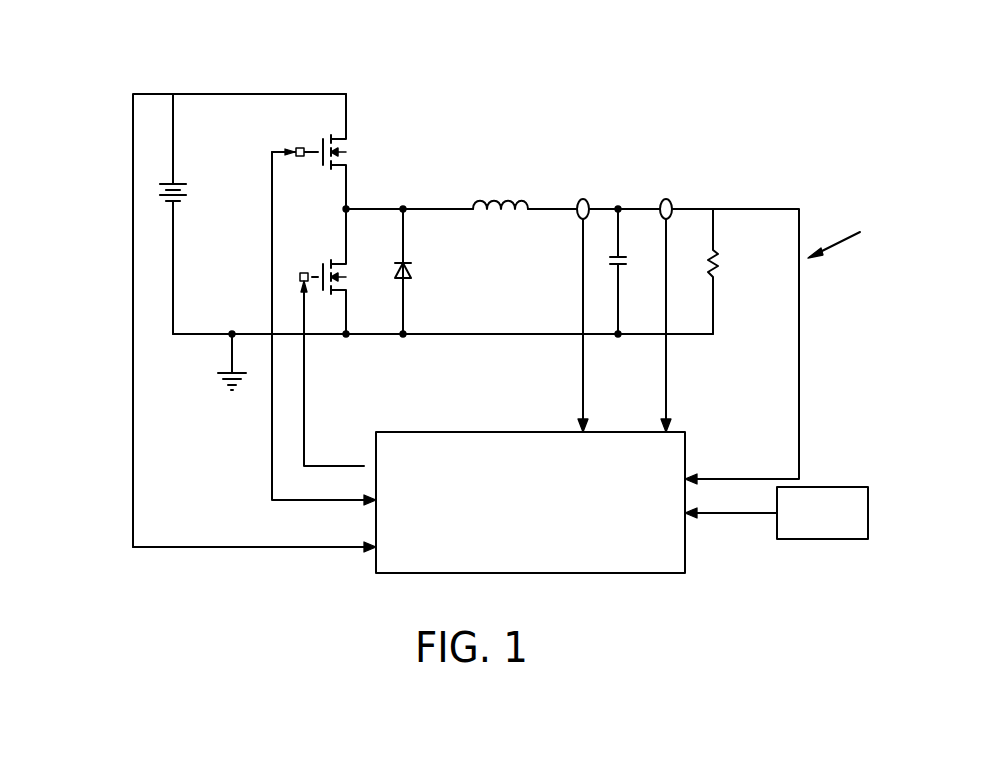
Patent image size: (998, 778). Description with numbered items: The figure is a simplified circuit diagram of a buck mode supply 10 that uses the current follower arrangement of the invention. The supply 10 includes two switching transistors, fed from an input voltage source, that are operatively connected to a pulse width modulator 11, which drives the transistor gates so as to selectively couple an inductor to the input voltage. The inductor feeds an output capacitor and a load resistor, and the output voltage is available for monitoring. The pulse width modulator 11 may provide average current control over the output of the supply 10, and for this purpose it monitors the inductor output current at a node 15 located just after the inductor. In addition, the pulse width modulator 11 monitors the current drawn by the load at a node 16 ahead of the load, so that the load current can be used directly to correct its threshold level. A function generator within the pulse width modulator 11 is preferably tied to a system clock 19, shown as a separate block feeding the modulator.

The buck mode supply 10 is at (805, 186).
The pulse width modulator 11 is at (688, 526).
The node 15 is at (585, 199).
The node 16 is at (668, 199).
The system clock 19 is at (896, 491).